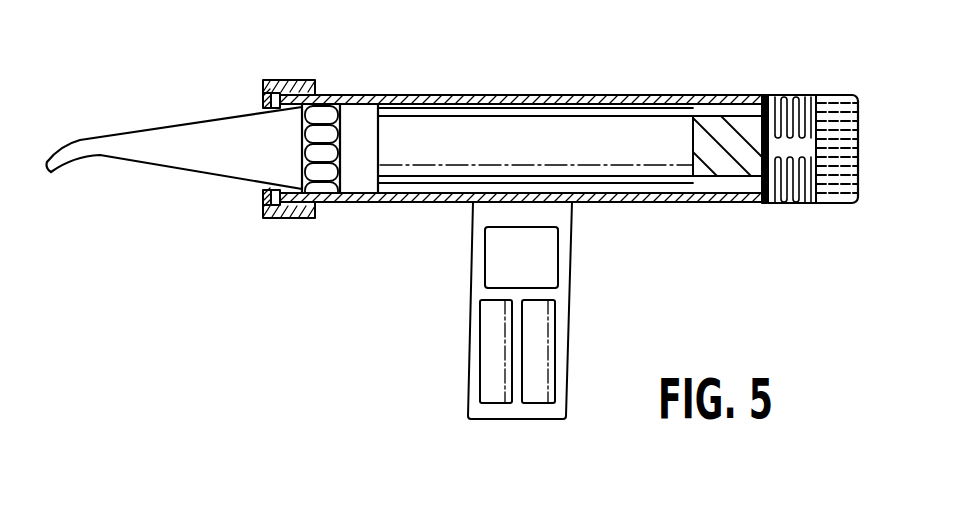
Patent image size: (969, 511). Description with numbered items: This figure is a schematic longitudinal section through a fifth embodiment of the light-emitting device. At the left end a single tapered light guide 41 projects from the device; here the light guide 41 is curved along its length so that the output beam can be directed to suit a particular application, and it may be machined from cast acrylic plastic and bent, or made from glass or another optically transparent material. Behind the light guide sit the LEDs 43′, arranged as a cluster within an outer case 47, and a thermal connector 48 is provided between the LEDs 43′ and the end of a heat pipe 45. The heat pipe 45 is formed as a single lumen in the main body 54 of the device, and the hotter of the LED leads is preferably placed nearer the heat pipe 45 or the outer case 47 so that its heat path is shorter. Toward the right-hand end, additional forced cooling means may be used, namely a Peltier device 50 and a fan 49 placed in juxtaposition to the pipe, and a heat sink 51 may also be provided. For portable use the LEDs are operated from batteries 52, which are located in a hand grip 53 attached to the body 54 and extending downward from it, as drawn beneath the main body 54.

The light guide 41 is at (171, 144).
The LEDs 43′ is at (318, 114).
The heat pipe 45 is at (571, 134).
The outer case 47 is at (500, 94).
The thermal connector 48 is at (362, 116).
The fan 49 is at (852, 91).
The Peltier device 50 is at (709, 132).
The heat sink 51 is at (789, 90).
The batteries 52 is at (533, 350).
The hand grip 53 is at (545, 257).
The main body 54 is at (406, 211).